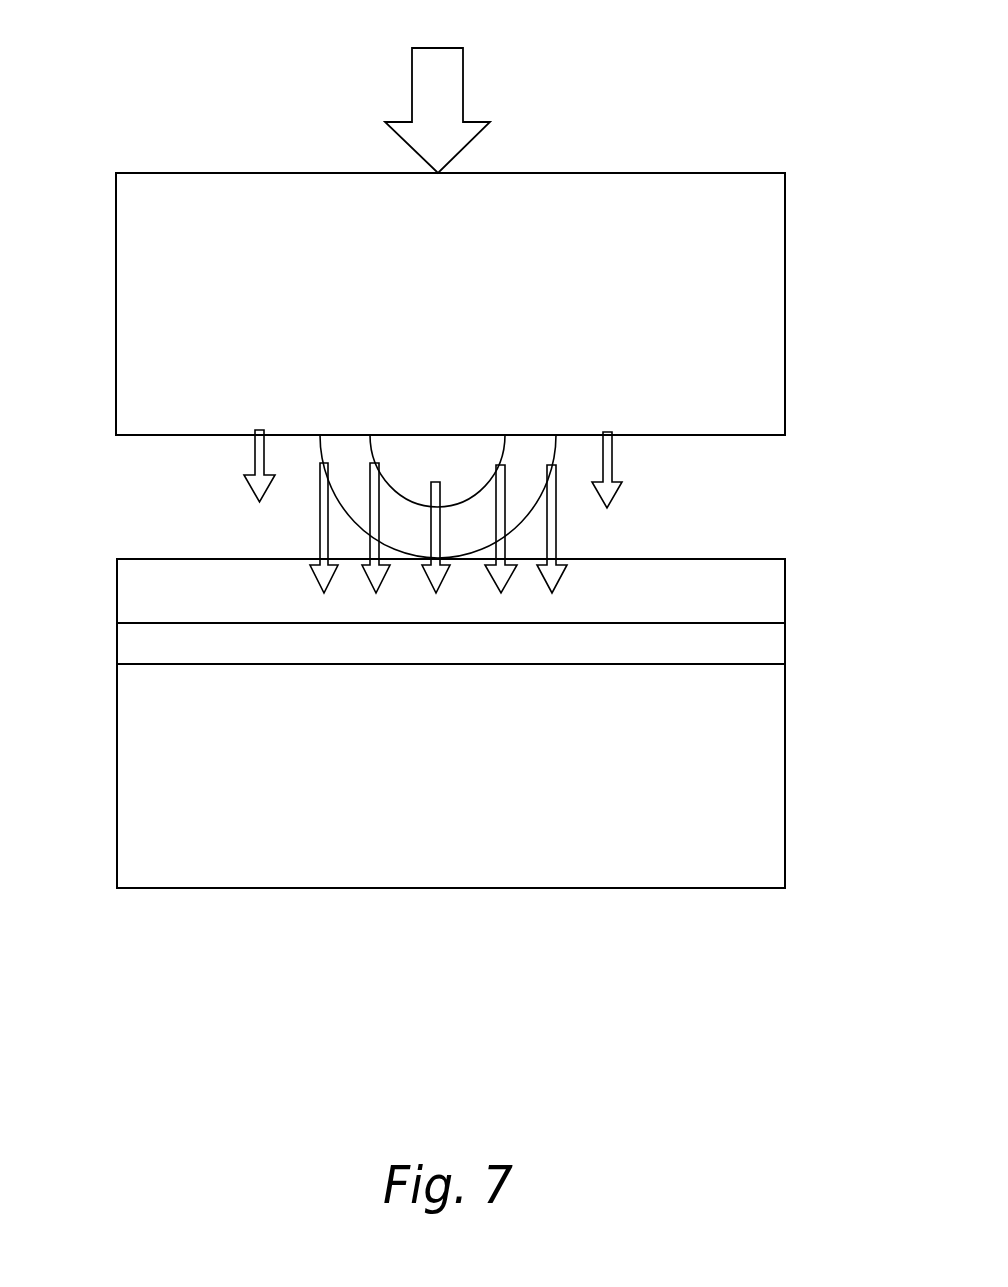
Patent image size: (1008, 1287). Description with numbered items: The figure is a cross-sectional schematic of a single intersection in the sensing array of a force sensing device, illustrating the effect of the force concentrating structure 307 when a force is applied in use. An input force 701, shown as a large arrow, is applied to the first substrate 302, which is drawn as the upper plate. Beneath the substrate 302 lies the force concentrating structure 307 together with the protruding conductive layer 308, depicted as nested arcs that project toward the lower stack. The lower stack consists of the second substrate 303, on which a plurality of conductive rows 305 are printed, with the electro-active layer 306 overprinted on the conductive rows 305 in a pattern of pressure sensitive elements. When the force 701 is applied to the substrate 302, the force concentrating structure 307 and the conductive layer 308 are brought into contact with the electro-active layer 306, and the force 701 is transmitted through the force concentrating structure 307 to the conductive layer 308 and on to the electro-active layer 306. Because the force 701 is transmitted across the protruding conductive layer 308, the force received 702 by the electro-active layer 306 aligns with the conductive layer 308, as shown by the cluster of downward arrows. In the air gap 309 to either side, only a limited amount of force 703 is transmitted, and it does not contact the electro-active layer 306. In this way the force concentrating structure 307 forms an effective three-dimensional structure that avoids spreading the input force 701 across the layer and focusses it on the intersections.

The force 701 is at (457, 67).
The first substrate 302 is at (770, 258).
The force concentrating structure 307 is at (432, 445).
The conductive layer 308 is at (533, 445).
The force 703 is at (260, 450).
The air gap 309 is at (184, 529).
The force received 702 is at (435, 583).
The electro-active layer 306 is at (770, 587).
The conductive rows 305 is at (770, 650).
The second substrate 303 is at (770, 748).